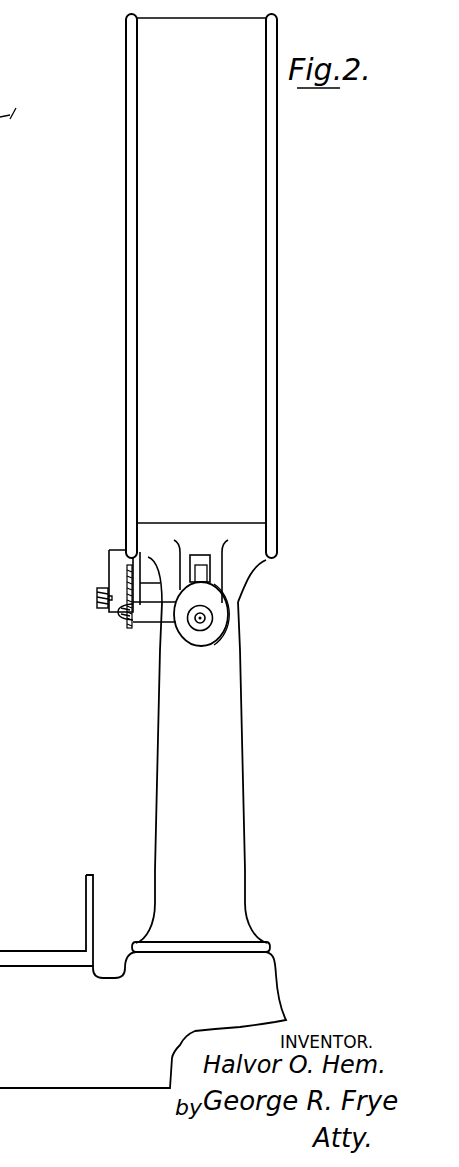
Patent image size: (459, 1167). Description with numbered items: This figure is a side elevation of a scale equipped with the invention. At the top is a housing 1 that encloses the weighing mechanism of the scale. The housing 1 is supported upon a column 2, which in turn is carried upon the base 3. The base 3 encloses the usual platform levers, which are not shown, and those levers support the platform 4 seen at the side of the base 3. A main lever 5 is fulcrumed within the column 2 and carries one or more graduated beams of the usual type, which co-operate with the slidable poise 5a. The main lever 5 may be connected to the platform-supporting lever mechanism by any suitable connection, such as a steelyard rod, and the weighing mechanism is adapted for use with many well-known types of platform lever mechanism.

The housing 1 is at (262, 253).
The column 2 is at (238, 712).
The base 3 is at (277, 968).
The platform 4 is at (0, 920).
The main lever 5 is at (203, 572).
The slidable poise 5a is at (113, 567).